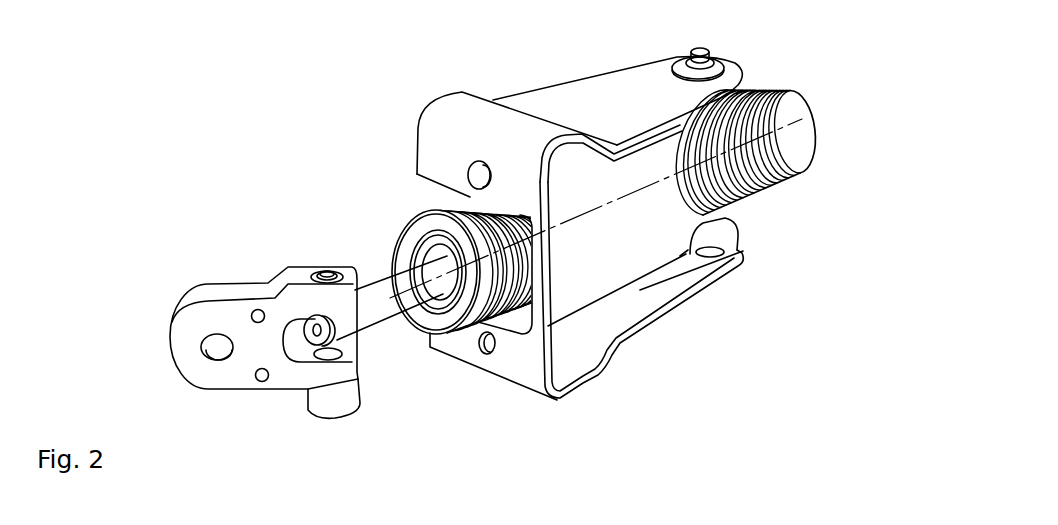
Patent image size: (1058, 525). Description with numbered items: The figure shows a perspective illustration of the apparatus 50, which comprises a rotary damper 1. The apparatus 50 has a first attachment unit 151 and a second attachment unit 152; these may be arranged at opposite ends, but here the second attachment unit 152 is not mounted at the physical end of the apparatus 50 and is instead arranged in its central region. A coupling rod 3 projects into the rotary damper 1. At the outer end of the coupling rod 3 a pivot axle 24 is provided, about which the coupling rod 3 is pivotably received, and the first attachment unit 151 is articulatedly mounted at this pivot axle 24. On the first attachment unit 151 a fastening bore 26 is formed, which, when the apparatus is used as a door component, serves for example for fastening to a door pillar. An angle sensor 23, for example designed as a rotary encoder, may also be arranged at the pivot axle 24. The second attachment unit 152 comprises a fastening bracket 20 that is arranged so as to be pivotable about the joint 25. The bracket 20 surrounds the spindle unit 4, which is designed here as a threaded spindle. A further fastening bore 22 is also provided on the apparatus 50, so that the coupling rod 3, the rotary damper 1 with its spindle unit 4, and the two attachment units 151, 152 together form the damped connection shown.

The rotary damper 1 is at (386, 210).
The coupling rod 3 is at (385, 305).
The spindle unit 4 is at (757, 182).
The fastening bracket 20 is at (627, 308).
The fastening bore 22 is at (467, 166).
The angle sensor 23 is at (330, 397).
The pivot axle 24 is at (323, 270).
The joint 25 is at (712, 50).
The fastening bore 26 is at (208, 344).
The apparatus 50 is at (232, 136).
The first attachment unit 151 is at (173, 264).
The second attachment unit 152 is at (406, 99).